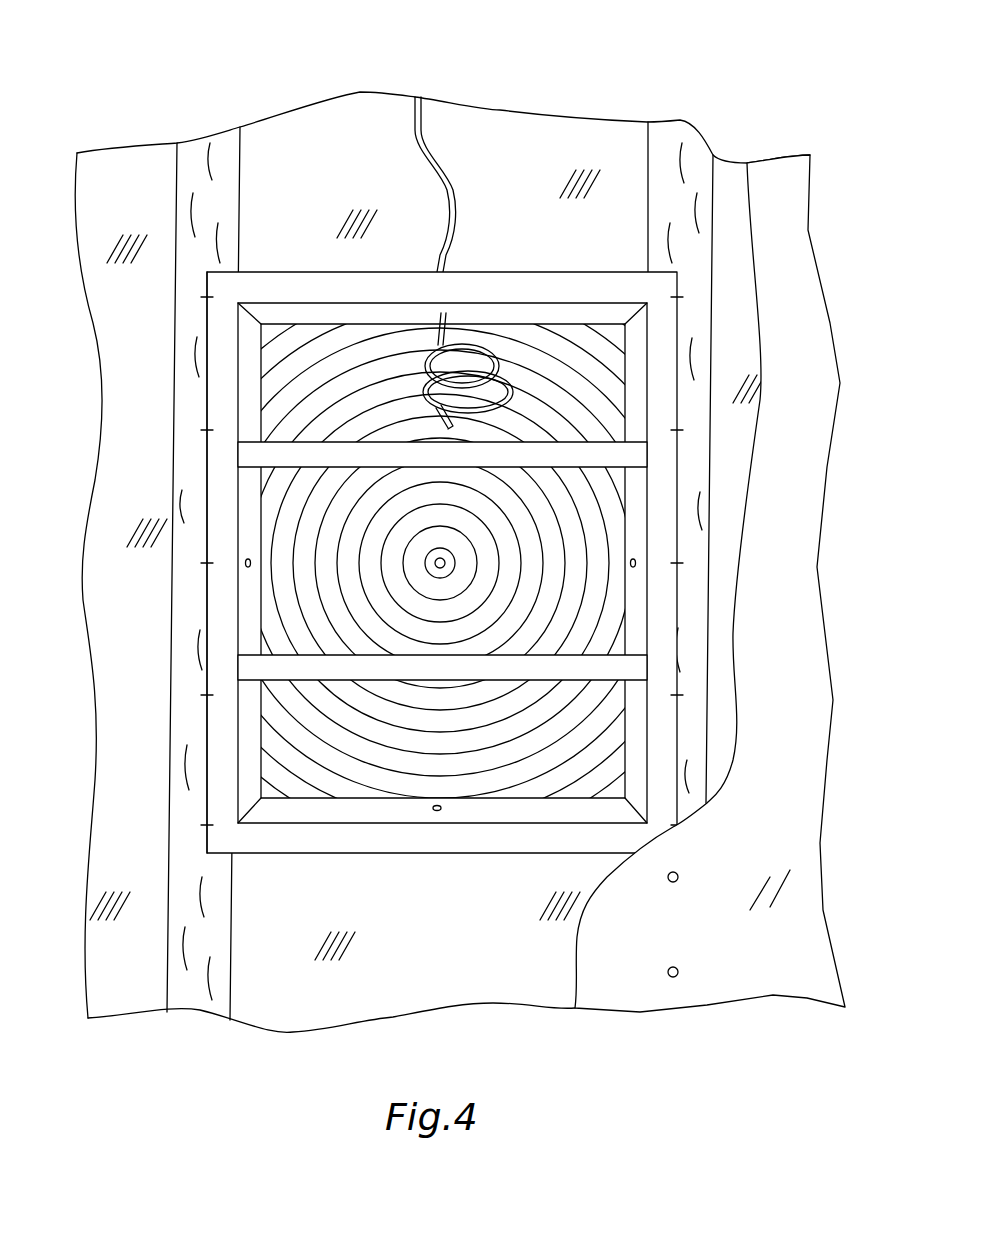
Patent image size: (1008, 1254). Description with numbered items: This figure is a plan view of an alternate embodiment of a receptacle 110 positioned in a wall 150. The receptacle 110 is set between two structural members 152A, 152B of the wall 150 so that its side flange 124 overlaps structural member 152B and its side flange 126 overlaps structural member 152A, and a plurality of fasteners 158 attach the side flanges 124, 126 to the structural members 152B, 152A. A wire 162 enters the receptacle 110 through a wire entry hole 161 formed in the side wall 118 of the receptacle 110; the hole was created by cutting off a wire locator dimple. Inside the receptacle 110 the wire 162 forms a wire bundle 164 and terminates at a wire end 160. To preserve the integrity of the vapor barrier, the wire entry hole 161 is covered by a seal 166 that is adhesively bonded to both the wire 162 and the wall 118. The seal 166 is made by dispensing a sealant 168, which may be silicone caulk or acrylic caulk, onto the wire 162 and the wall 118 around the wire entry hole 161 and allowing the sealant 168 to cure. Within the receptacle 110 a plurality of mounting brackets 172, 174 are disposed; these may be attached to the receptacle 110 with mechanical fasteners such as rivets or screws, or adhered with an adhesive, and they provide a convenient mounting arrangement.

The receptacle 110 is at (386, 677).
The side wall 118 is at (600, 313).
The side flange 124 is at (461, 562).
The side flange 126 is at (215, 752).
The wall 150 is at (547, 1050).
The structural member 152A is at (200, 157).
The structural member 152B is at (698, 163).
The fasteners 158 is at (192, 693).
The wire end 160 is at (445, 416).
The wire entry hole 161 is at (322, 255).
The wire 162 is at (413, 125).
The wire bundle 164 is at (480, 373).
The seal 166 is at (273, 380).
The sealant 168 is at (463, 677).
The mounting bracket 172 is at (613, 457).
The mounting bracket 174 is at (613, 670).